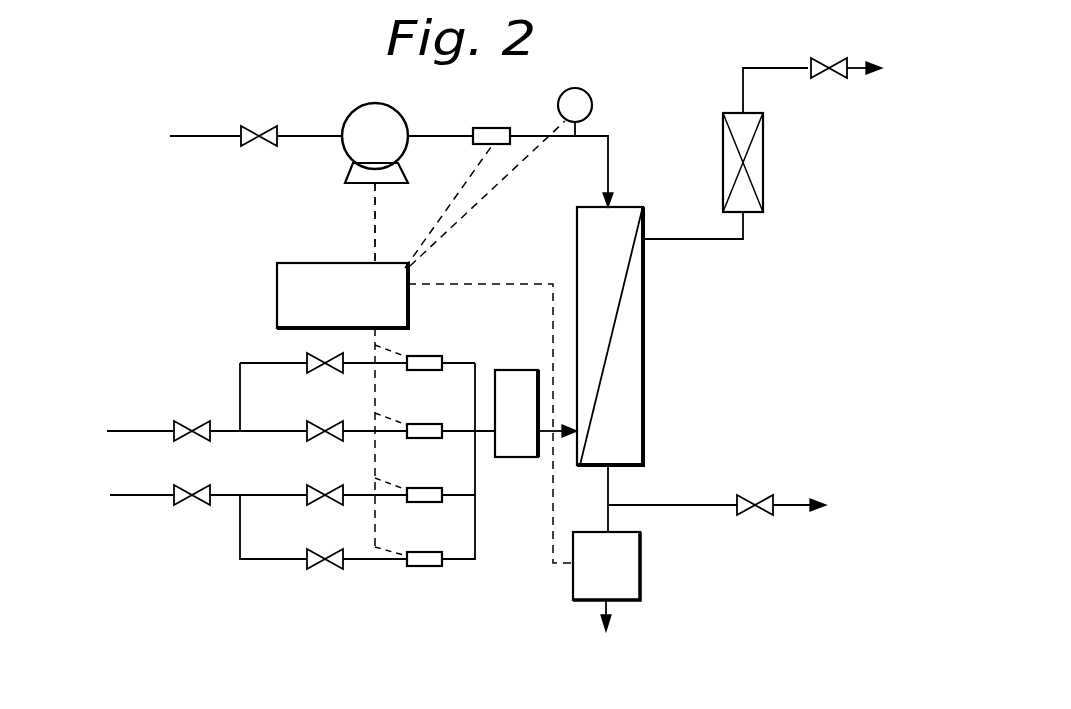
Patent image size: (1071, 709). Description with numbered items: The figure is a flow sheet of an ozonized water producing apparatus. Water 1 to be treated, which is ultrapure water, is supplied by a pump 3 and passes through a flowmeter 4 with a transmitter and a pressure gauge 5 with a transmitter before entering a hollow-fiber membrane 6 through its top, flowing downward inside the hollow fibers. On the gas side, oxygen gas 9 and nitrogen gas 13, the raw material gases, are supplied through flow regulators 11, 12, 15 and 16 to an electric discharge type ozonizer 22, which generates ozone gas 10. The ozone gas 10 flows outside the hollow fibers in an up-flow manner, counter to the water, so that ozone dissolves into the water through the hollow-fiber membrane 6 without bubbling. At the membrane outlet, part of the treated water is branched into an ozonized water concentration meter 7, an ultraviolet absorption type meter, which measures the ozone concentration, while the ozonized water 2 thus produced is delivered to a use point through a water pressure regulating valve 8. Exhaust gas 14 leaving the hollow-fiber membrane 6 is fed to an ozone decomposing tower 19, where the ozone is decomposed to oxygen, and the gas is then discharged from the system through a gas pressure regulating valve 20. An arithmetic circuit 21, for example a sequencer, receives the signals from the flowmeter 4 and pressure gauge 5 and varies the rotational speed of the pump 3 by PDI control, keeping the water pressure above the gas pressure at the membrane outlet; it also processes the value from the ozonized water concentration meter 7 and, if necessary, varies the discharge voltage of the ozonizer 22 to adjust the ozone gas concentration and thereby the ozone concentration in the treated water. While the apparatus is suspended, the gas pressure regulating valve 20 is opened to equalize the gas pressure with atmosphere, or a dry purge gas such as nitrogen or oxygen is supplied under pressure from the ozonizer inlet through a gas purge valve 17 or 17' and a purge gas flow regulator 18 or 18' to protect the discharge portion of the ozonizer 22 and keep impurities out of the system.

The water to be treated 1 is at (205, 136).
The ozonized water 2 is at (794, 508).
The pump 3 is at (405, 115).
The flowmeter 4 is at (497, 133).
The pressure gauge 5 is at (594, 105).
The hollow-fiber membrane 6 is at (645, 293).
The ozonized water concentration meter 7 is at (642, 573).
The water pressure regulating valve 8 is at (745, 492).
The oxygen gas 9 is at (134, 431).
The ozone gas 10 is at (565, 437).
The flow regulator 11 is at (311, 421).
The flow regulator 12 is at (411, 424).
The nitrogen gas 13 is at (137, 497).
The exhaust gas 14 is at (680, 239).
The flow regulator 15 is at (311, 488).
The flow regulator 16 is at (411, 489).
The gas purge valve 17 is at (357, 541).
The gas purge valve 17' is at (318, 342).
The purge gas flow regulator 18 is at (441, 464).
The purge gas flow regulator 18' is at (441, 331).
The ozone decomposing tower 19 is at (764, 187).
The gas pressure regulating valve 20 is at (820, 80).
The arithmetic circuit 21 is at (277, 290).
The electric discharge type ozonizer 22 is at (507, 370).